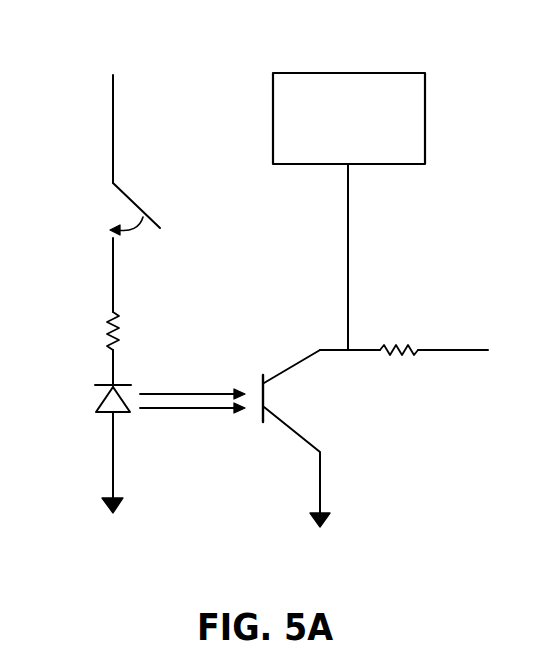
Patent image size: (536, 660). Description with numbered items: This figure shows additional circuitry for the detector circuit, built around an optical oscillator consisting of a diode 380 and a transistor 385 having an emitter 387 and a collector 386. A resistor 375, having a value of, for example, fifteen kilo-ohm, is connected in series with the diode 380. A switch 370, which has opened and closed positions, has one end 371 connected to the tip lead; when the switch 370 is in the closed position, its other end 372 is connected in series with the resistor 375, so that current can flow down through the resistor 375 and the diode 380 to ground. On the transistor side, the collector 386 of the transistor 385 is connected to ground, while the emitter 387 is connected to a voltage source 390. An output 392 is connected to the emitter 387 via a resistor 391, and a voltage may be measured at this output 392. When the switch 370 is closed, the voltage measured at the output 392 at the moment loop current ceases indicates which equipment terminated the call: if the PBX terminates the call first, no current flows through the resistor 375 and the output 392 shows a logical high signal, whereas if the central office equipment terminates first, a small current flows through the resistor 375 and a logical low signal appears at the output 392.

The switch 370 is at (133, 203).
The one end of switch 371 is at (113, 100).
The other end of switch 372 is at (160, 228).
The resistor 375 is at (107, 326).
The diode 380 is at (100, 396).
The transistor 385 is at (266, 404).
The collector 386 is at (320, 463).
The emitter 387 is at (293, 365).
The voltage source 390 is at (343, 73).
The resistor 391 is at (402, 344).
The output 392 is at (487, 349).